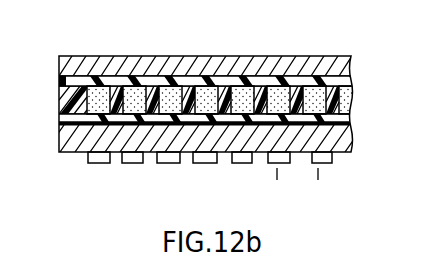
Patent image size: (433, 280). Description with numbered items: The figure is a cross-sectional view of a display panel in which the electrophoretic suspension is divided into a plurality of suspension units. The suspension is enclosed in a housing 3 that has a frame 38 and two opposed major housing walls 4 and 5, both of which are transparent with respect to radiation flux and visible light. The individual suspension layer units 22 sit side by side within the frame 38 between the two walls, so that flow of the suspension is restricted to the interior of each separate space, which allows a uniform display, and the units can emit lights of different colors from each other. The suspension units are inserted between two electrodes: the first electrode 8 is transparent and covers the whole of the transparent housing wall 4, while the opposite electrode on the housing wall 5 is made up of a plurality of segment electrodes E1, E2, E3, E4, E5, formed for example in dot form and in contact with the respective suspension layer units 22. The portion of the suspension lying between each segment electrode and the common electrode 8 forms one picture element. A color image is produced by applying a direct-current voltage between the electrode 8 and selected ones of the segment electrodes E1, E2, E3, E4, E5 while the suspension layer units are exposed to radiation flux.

The housing 3 is at (58, 42).
The housing wall 4 is at (60, 63).
The first electrode 8 is at (60, 81).
The frame 38 is at (60, 100).
The gas discharge cell 22 is at (169, 99).
The housing wall 5 is at (60, 134).
The segment electrode E1 is at (100, 168).
The segment electrode E2 is at (133, 168).
The segment electrode E3 is at (168, 168).
The segment electrode E4 is at (205, 168).
The segment electrode E5 is at (242, 168).